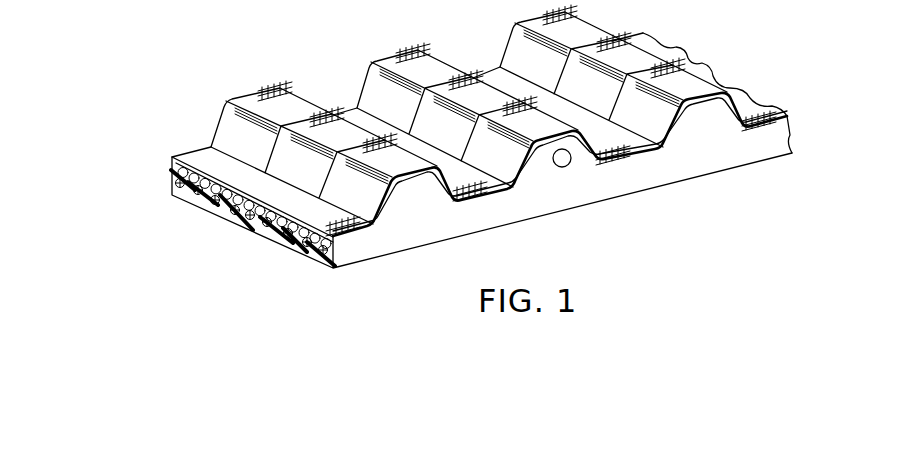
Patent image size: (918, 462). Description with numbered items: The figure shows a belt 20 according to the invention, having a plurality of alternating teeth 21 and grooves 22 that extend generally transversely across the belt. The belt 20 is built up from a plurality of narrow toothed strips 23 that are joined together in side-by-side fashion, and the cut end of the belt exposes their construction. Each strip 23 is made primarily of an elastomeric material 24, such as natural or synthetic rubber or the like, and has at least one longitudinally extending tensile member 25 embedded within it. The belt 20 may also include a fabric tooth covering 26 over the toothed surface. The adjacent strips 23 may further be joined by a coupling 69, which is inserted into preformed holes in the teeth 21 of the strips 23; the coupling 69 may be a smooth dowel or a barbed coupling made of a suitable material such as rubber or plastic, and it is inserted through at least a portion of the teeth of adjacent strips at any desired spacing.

The belt 20 is at (184, 113).
The teeth 21 is at (246, 93).
The grooves 22 is at (347, 110).
The toothed strips 23 is at (302, 242).
The elastomeric material 24 is at (327, 268).
The tensile member 25 is at (325, 250).
The fabric tooth covering 26 is at (172, 159).
The coupling 69 is at (572, 160).